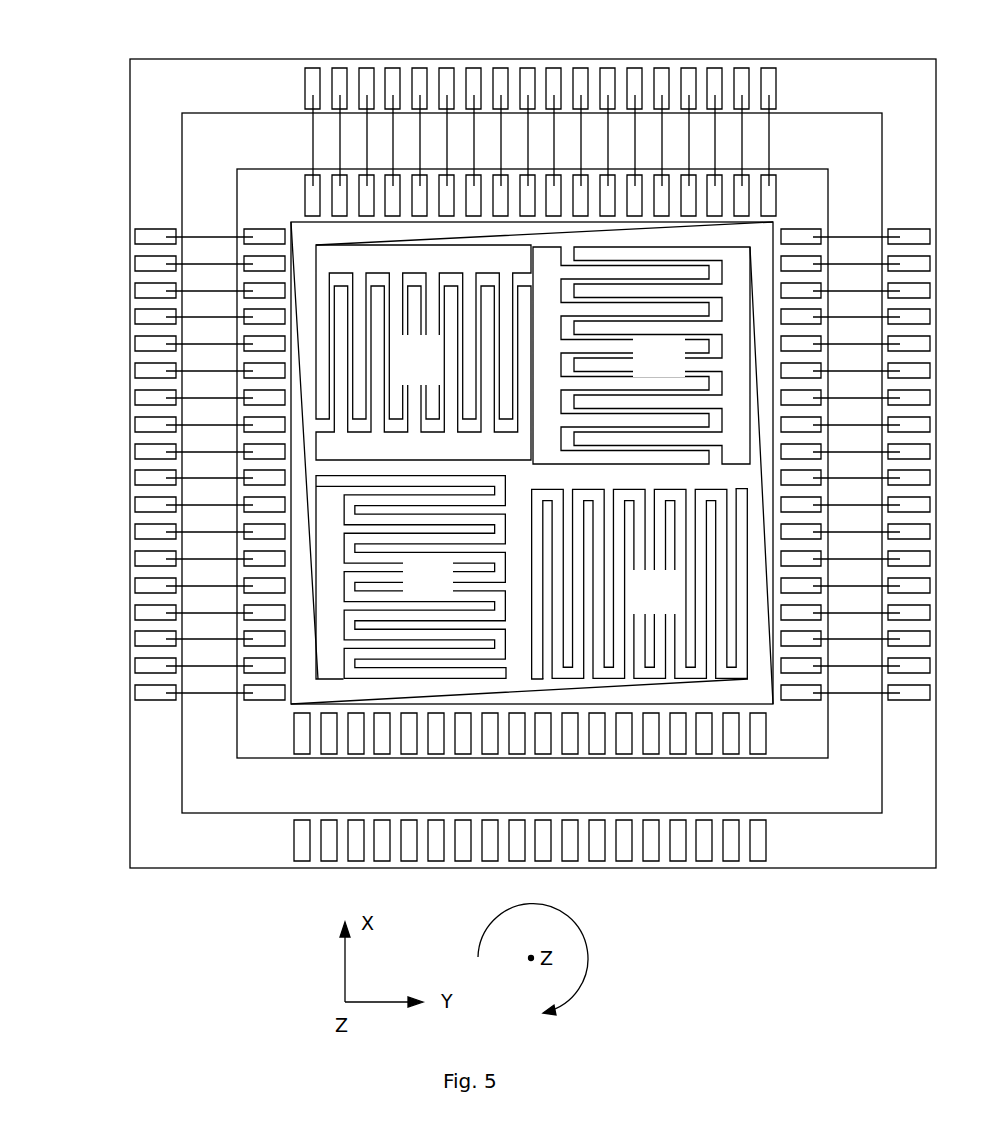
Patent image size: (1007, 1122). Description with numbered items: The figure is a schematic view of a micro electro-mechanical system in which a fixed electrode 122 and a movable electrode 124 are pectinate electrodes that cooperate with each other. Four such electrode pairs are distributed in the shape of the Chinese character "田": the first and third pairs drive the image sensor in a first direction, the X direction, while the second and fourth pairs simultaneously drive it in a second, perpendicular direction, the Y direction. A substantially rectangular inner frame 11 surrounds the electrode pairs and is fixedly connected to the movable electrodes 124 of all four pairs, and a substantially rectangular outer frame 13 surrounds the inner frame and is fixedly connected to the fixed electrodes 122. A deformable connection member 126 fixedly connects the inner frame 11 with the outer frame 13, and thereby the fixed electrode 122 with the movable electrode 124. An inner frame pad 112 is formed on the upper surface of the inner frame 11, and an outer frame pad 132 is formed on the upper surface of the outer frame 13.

The inner frame 11 is at (283, 757).
The inner frame pad 112 is at (325, 748).
The fixed electrode 122 is at (327, 278).
The movable electrode 124 is at (510, 655).
The deformable connection member 126 is at (768, 147).
The outer frame 13 is at (153, 787).
The outer frame pad 132 is at (138, 694).